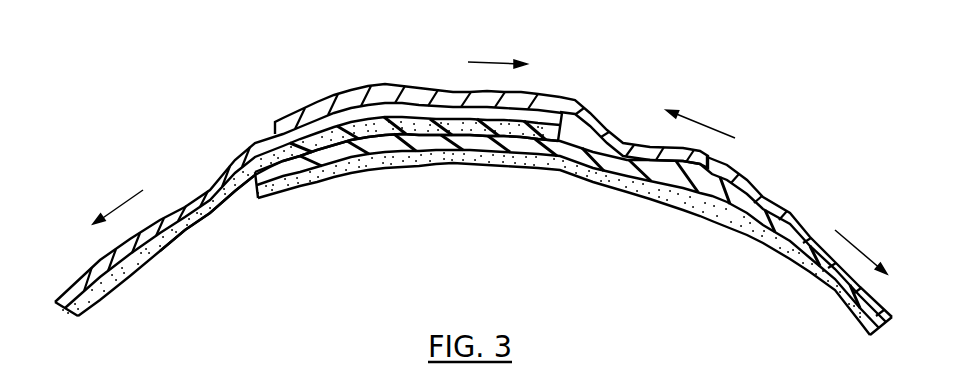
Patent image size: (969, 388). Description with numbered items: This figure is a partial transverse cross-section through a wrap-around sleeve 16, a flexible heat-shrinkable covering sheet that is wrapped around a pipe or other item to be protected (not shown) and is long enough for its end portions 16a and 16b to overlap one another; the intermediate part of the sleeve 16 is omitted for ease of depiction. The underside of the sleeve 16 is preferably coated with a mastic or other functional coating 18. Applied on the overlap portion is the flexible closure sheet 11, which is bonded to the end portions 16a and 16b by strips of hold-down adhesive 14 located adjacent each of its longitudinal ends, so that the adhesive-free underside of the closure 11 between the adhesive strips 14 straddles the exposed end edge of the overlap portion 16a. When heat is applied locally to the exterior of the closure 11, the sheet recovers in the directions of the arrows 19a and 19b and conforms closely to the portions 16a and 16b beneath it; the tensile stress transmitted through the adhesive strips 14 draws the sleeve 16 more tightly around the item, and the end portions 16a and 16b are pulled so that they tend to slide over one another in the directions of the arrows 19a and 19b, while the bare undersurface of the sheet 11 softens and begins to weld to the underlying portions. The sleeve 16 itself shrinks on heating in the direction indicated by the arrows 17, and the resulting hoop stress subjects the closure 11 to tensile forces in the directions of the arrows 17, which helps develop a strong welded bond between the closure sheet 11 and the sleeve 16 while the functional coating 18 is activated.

The closure sheet 11 is at (593, 117).
The strip of hold-down adhesive 14 is at (350, 106).
The wrap-around sleeve 16 is at (90, 267).
The overlapped end portion 16a is at (550, 117).
The overlapped end portion 16b is at (563, 147).
The arrows indicating sleeve shrink direction 17 is at (127, 195).
The functional coating 18 is at (193, 223).
The arrow indicating closure recovery direction 19a is at (494, 60).
The arrow indicating closure recovery direction 19b is at (718, 122).